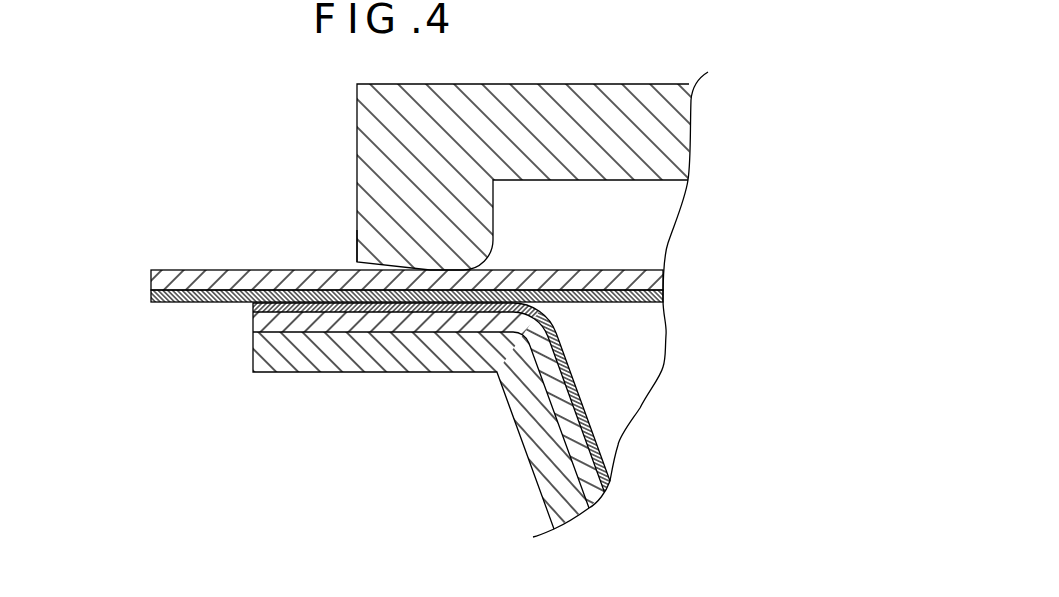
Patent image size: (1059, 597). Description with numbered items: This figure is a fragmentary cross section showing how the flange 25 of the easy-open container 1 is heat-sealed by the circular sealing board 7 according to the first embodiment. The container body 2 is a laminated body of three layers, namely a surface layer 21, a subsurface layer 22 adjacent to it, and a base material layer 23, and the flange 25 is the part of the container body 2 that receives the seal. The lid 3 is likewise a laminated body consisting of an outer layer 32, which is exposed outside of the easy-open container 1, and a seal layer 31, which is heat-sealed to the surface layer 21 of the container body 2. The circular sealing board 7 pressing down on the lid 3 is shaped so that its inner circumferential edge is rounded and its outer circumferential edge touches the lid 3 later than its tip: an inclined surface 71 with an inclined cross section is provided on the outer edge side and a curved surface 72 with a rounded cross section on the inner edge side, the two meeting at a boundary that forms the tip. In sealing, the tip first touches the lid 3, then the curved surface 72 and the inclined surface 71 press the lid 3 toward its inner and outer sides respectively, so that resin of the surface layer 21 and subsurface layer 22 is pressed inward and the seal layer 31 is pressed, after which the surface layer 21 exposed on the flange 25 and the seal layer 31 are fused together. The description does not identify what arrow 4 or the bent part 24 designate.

The easy-open container 1 is at (52, 272).
The container body 2 is at (90, 345).
The lid 3 is at (87, 258).
The laminate assembly 4 is at (191, 232).
The circular sealing board 7 is at (509, 186).
The surface layer 21 is at (253, 307).
The subsurface layer 22 is at (253, 323).
The base material layer 23 is at (253, 360).
The bent side wall portion 24 is at (642, 367).
The flange 25 is at (392, 330).
The seal layer 31 is at (152, 299).
The outer layer 32 is at (151, 283).
The inclined surface 71 is at (358, 267).
The curved surface 72 is at (492, 252).